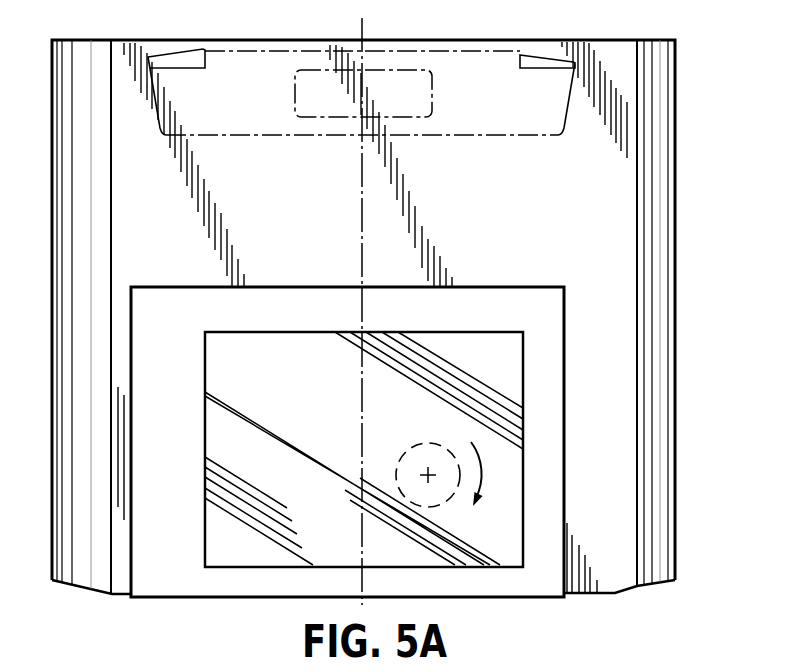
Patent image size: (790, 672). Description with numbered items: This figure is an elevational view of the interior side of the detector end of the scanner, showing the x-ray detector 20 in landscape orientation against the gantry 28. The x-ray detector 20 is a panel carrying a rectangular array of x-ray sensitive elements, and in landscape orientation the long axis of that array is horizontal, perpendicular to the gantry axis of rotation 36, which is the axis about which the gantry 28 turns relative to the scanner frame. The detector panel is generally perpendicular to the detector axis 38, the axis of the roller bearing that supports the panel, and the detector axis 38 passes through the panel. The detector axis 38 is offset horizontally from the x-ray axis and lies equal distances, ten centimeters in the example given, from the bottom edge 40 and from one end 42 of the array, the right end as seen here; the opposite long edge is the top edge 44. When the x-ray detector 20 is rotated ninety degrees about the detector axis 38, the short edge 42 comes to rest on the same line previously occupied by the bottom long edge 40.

The x-ray detector 20 is at (489, 280).
The gantry 28 is at (440, 135).
The gantry axis of rotation 36 is at (363, 30).
The detector axis 38 is at (428, 475).
The bottom edge 40 is at (476, 567).
The end of the array 42 is at (523, 413).
The top edge 44 is at (287, 332).